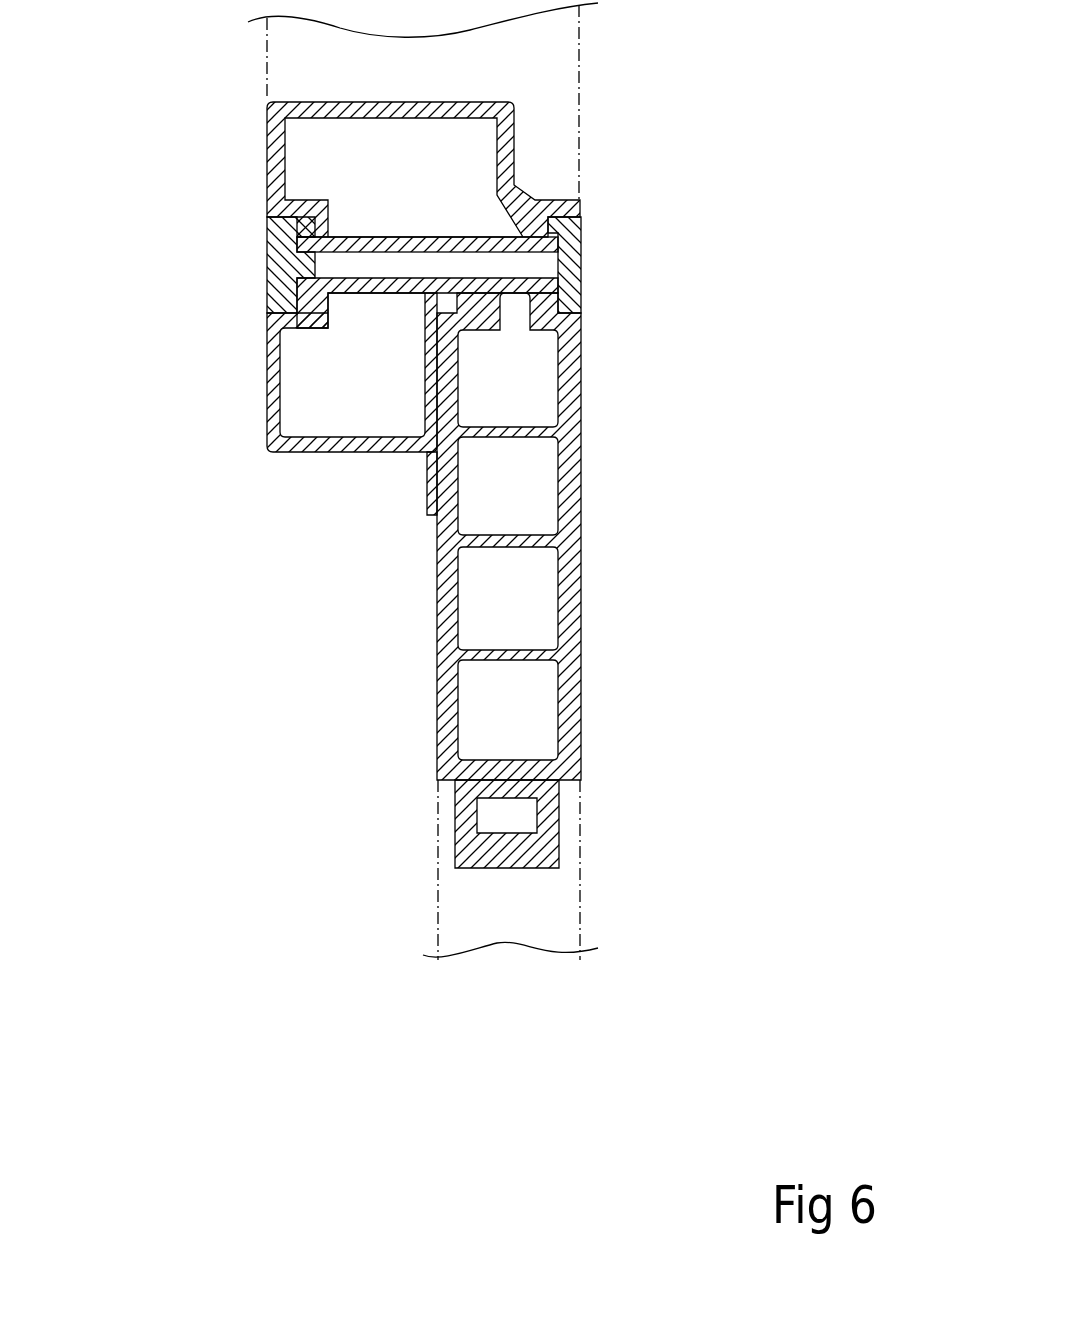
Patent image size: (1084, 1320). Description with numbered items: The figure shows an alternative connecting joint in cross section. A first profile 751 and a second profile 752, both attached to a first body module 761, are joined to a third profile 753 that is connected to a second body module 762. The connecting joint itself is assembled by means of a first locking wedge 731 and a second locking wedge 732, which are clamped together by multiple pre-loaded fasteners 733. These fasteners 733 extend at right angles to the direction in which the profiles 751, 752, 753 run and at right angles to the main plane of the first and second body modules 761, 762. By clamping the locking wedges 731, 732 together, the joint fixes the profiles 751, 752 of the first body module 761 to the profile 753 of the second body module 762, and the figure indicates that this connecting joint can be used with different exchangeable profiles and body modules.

The third profile 753 is at (265, 172).
The pre-loaded fasteners 733 is at (540, 265).
The second locking wedge 732 is at (265, 270).
The first locking wedge 731 is at (581, 287).
The first profile 751 is at (265, 410).
The second profile 752 is at (577, 488).
The second body module 762 is at (447, 84).
The first body module 761 is at (533, 931).